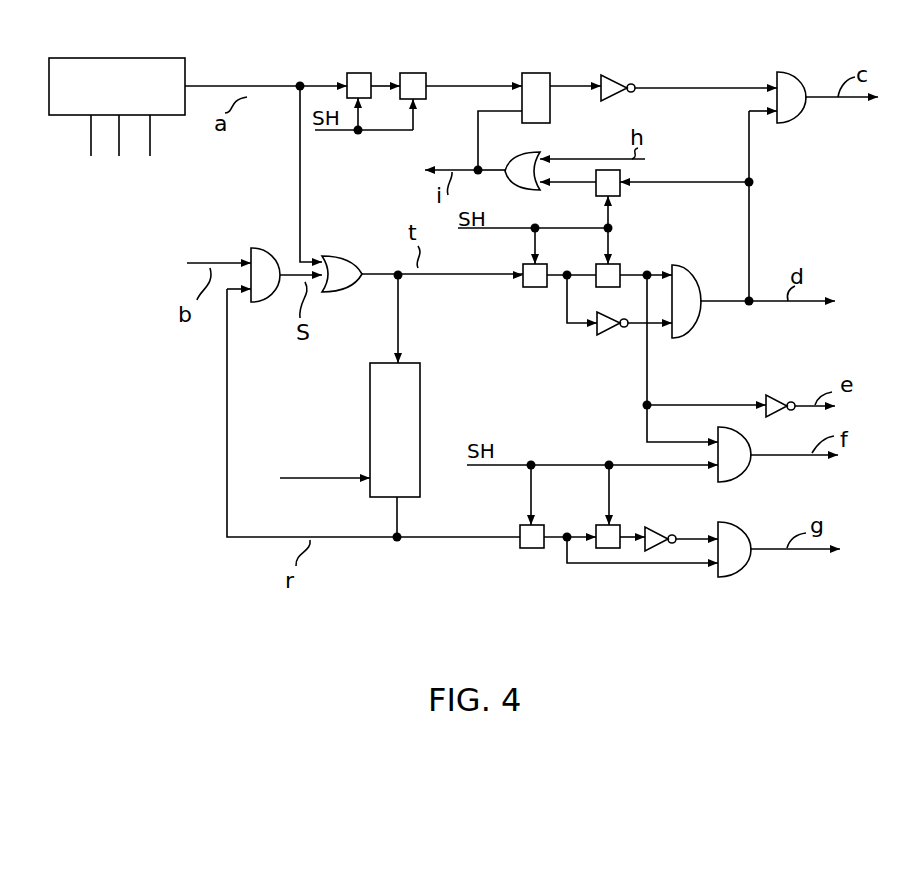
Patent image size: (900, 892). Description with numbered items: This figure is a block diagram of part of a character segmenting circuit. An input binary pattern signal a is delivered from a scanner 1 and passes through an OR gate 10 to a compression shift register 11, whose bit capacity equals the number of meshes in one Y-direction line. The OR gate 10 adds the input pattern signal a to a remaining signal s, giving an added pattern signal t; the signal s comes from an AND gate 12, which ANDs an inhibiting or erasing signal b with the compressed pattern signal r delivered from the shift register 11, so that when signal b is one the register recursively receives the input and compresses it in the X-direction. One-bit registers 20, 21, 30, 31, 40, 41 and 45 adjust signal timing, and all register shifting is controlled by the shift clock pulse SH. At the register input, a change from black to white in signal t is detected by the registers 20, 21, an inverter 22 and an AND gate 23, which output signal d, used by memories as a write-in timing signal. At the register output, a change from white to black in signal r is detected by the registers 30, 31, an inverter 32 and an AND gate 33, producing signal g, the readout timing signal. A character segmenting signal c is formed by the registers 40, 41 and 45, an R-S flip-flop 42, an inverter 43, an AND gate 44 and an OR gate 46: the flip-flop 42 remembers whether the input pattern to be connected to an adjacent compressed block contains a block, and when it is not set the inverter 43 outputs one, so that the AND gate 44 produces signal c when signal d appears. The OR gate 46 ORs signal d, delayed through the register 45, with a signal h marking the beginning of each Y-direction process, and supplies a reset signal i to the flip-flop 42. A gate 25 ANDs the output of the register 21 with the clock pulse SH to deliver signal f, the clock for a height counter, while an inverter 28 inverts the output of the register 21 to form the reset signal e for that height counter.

The scanner 1 is at (122, 58).
The OR gate 10 is at (350, 292).
The compression shift register 11 is at (420, 397).
The AND gate 12 is at (262, 303).
The one-bit register 20 is at (521, 266).
The one-bit register 21 is at (620, 265).
The inverter 22 is at (604, 336).
The AND gate 23 is at (690, 275).
The gate 25 is at (748, 441).
The inverter 28 is at (774, 395).
The one-bit register 30 is at (535, 550).
The one-bit register 31 is at (618, 526).
The inverter 32 is at (660, 532).
The AND gate 33 is at (740, 537).
The one-bit register 40 is at (358, 72).
The one-bit register 41 is at (414, 72).
The R-S flip-flop 42 is at (540, 72).
The inverter 43 is at (610, 74).
The AND gate 44 is at (797, 78).
The one-bit register 45 is at (622, 192).
The OR gate 46 is at (536, 152).